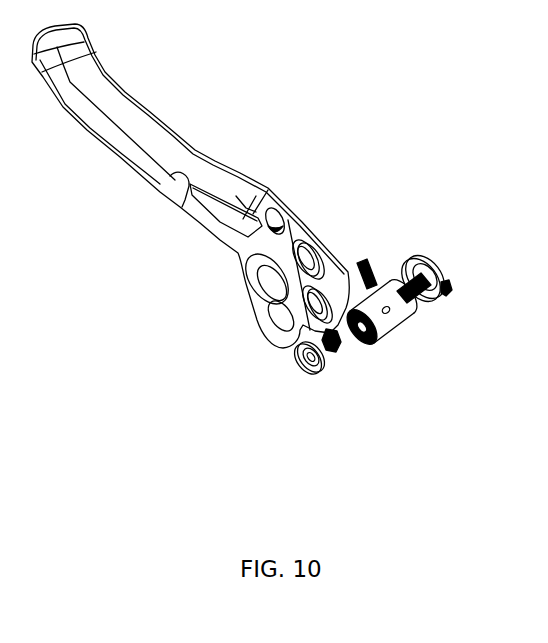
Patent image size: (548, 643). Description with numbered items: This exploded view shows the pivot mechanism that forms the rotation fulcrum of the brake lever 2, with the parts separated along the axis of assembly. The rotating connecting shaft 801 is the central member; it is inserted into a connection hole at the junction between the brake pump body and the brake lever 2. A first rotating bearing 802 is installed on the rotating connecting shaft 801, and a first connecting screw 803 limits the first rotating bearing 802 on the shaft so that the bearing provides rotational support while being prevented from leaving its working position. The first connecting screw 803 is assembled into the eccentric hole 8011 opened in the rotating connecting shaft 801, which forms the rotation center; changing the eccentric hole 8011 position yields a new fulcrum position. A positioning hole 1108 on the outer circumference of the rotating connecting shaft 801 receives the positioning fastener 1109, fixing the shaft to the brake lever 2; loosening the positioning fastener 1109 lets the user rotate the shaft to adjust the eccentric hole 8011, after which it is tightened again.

The brake lever 2 is at (165, 128).
The positioning fastener 1109 is at (372, 260).
The first connecting screw 803 is at (443, 262).
The first rotating bearing 802 is at (442, 292).
The rotating connecting shaft 801 is at (409, 317).
The positioning hole 1108 is at (393, 326).
The eccentric hole 8011 is at (371, 344).